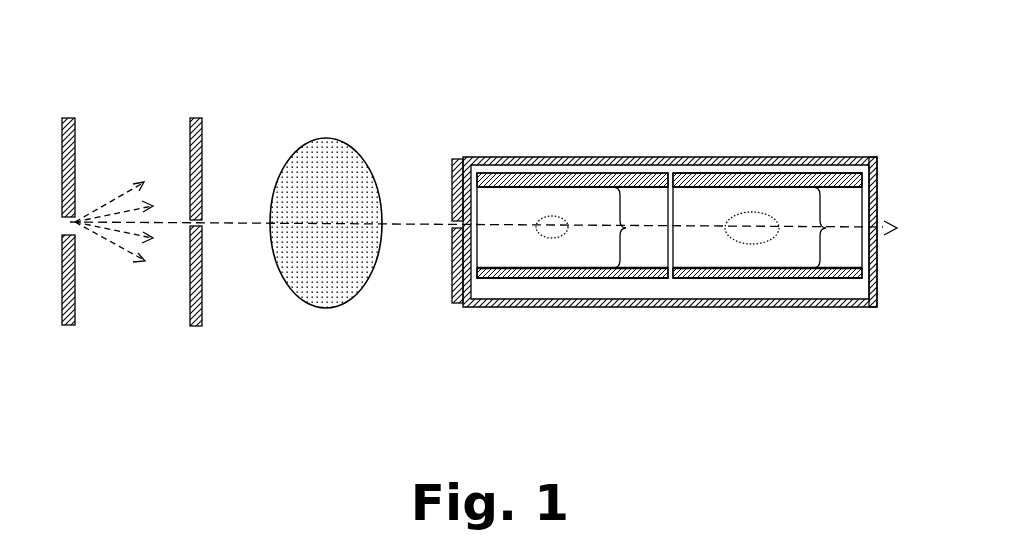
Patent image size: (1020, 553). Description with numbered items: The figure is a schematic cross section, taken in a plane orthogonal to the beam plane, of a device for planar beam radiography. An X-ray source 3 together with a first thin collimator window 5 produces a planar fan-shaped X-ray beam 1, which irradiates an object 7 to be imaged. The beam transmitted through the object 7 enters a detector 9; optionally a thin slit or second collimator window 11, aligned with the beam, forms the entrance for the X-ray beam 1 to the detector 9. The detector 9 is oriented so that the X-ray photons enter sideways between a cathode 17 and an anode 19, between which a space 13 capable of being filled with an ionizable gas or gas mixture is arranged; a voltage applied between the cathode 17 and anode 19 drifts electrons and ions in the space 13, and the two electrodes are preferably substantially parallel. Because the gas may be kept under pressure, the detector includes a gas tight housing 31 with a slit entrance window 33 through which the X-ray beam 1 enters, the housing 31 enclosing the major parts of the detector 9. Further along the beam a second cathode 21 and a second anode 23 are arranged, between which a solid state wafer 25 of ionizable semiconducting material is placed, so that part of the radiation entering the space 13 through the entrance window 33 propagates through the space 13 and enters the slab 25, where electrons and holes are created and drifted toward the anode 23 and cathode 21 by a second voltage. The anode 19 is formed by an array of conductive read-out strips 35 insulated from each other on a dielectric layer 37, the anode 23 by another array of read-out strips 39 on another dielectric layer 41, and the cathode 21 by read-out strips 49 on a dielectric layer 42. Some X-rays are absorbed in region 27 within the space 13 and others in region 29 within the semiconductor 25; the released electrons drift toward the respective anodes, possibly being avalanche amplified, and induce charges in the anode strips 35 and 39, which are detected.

The planar X-ray beam 1 is at (250, 222).
The X-ray source 3 is at (70, 218).
The first thin collimator window 5 is at (203, 310).
The object 7 is at (333, 307).
The detector 9 is at (447, 102).
The second collimator window 11 is at (448, 292).
The space 13 is at (585, 242).
The cathode 17 is at (577, 182).
The anode 19 is at (492, 276).
The second cathode 21 is at (787, 176).
The second anode 23 is at (774, 241).
The solid state wafer 25 is at (828, 255).
The region 27 is at (538, 216).
The region 29 is at (741, 214).
The gas tight housing 31 is at (628, 165).
The slit entrance window 33 is at (450, 216).
The conductive read-out strips 35 is at (595, 276).
The dielectric layer 37 is at (557, 276).
The conductive read-out strips 39 is at (797, 278).
The dielectric layer 41 is at (760, 278).
The dielectric layer 42 is at (840, 175).
The conductive read-out strips 49 is at (687, 175).